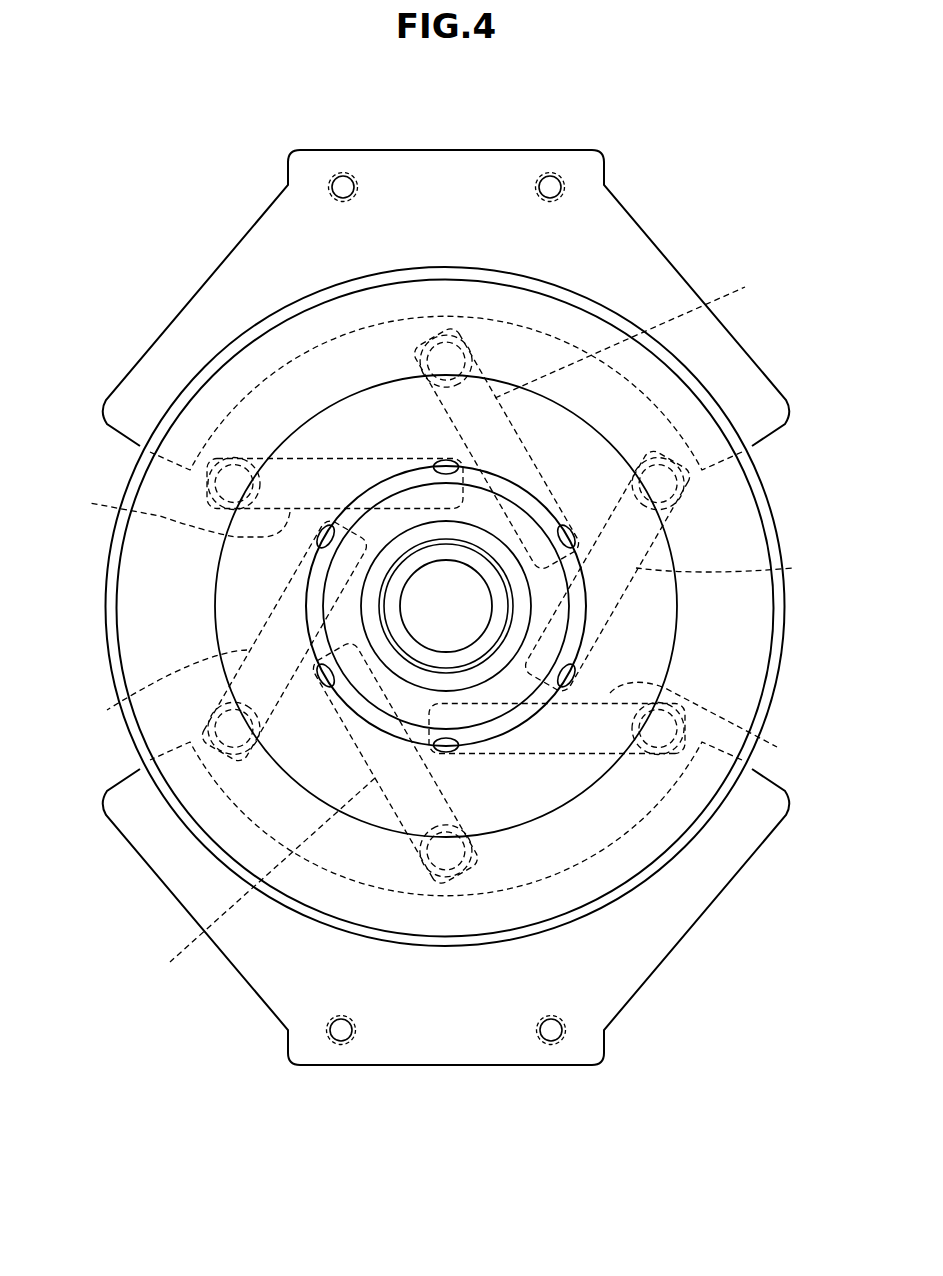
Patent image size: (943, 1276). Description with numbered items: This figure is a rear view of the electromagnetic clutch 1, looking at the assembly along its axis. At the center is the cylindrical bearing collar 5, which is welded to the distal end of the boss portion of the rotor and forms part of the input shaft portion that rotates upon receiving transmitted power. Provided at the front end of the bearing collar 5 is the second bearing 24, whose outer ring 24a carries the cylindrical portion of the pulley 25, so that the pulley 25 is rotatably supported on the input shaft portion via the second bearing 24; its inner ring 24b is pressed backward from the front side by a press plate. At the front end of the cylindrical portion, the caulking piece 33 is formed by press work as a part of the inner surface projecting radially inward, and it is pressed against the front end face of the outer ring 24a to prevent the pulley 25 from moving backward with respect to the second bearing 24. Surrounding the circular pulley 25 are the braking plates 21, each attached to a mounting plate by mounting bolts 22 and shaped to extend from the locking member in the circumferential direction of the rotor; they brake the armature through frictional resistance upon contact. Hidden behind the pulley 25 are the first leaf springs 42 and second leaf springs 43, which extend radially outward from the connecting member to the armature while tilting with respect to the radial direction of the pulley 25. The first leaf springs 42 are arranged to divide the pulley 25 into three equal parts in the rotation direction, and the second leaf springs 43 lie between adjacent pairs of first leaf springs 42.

The rotary machine assembly 1 is at (152, 155).
The bearing collar 5 is at (453, 662).
The braking plate 21 is at (661, 250).
The mounting bolt 22 is at (343, 186).
The second bearing 24 is at (587, 603).
The outer ring 24a is at (574, 634).
The inner ring 24b is at (522, 605).
The pulley 25 is at (775, 522).
The caulking piece 33 is at (443, 462).
The first leaf spring 42 is at (93, 503).
The second leaf spring 43 is at (664, 325).